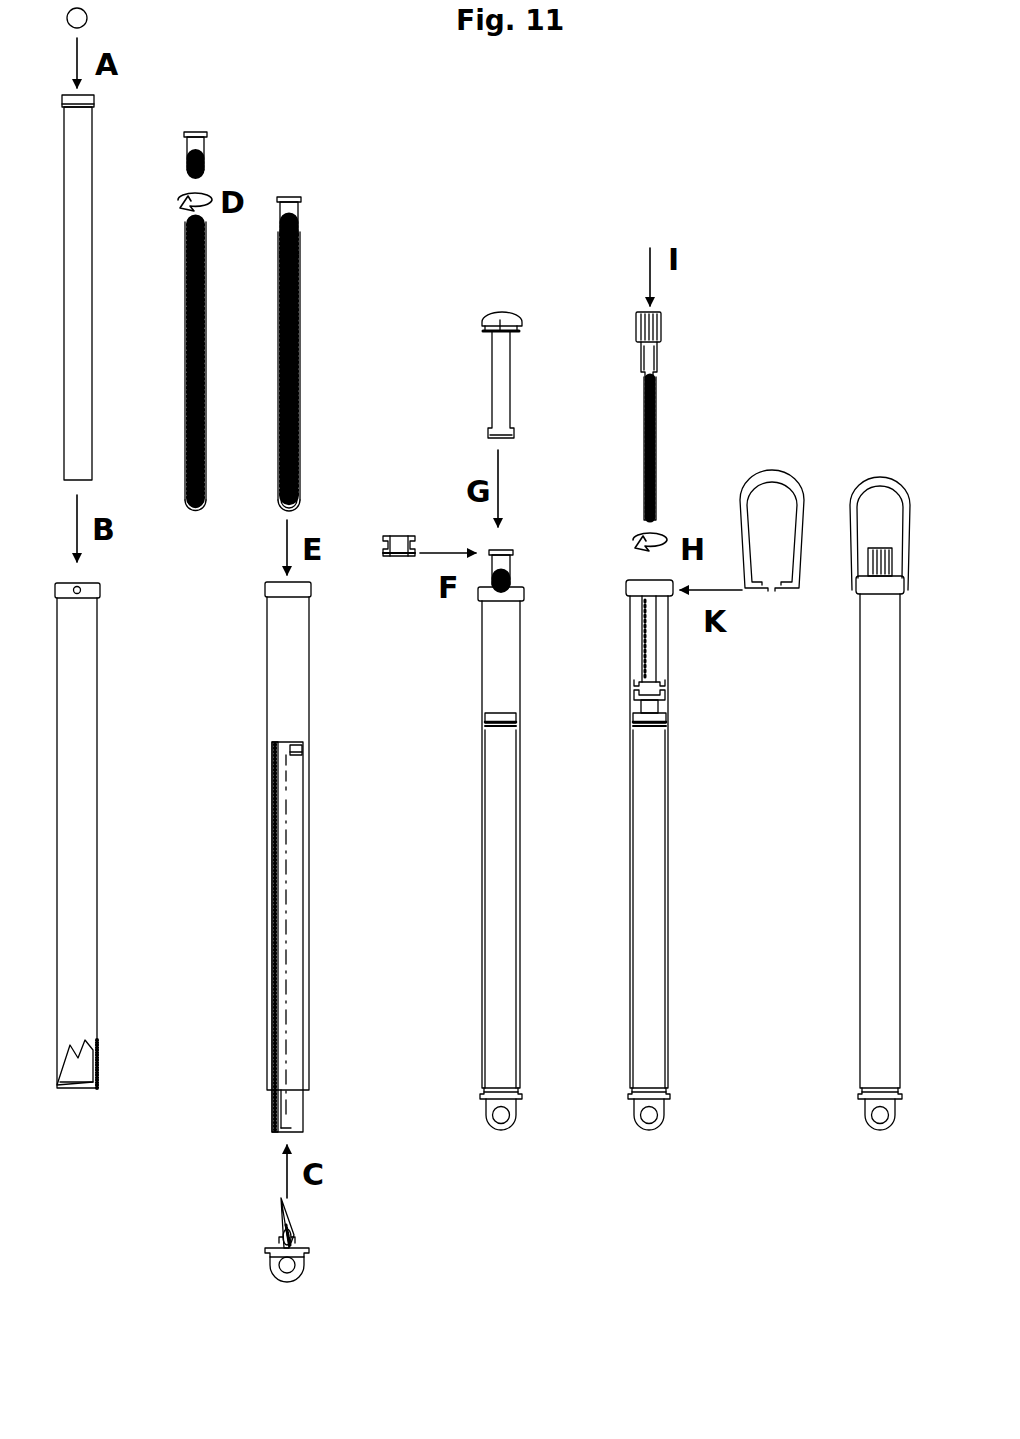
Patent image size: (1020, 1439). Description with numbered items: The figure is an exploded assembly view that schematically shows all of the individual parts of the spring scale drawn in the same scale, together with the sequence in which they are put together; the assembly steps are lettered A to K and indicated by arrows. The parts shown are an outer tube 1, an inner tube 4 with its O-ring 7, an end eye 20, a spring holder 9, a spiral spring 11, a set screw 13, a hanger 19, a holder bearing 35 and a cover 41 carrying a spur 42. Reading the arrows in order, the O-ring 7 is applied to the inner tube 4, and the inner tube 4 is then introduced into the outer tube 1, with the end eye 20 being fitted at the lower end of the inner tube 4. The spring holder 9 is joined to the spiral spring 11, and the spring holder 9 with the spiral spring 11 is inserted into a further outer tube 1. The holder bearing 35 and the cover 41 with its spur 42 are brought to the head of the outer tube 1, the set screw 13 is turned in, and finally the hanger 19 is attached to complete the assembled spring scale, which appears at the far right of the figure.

The outer tube 1 is at (98, 830).
The inner tube 4 is at (96, 263).
The O-ring 7 is at (96, 18).
The spring holder 9 is at (209, 150).
The spiral spring 11 is at (180, 352).
The set screw 13 is at (662, 388).
The hanger 19 is at (790, 598).
The end eye 20 is at (266, 1260).
The holder bearing 35 is at (398, 530).
The cover 41 is at (498, 304).
The spur 42 is at (515, 405).